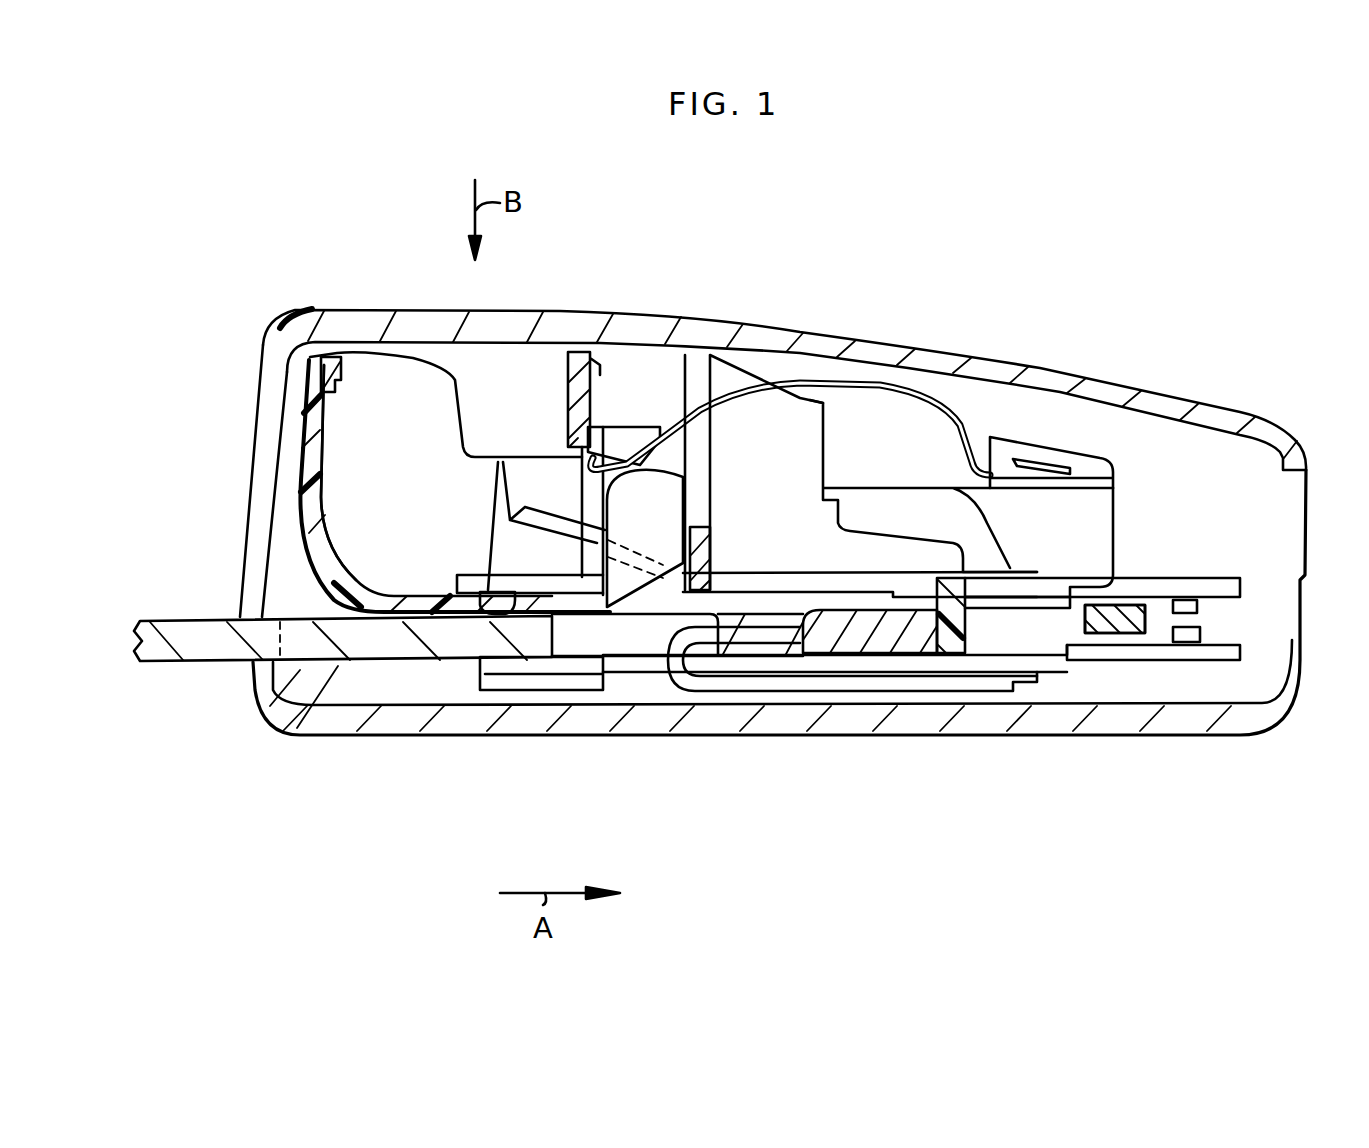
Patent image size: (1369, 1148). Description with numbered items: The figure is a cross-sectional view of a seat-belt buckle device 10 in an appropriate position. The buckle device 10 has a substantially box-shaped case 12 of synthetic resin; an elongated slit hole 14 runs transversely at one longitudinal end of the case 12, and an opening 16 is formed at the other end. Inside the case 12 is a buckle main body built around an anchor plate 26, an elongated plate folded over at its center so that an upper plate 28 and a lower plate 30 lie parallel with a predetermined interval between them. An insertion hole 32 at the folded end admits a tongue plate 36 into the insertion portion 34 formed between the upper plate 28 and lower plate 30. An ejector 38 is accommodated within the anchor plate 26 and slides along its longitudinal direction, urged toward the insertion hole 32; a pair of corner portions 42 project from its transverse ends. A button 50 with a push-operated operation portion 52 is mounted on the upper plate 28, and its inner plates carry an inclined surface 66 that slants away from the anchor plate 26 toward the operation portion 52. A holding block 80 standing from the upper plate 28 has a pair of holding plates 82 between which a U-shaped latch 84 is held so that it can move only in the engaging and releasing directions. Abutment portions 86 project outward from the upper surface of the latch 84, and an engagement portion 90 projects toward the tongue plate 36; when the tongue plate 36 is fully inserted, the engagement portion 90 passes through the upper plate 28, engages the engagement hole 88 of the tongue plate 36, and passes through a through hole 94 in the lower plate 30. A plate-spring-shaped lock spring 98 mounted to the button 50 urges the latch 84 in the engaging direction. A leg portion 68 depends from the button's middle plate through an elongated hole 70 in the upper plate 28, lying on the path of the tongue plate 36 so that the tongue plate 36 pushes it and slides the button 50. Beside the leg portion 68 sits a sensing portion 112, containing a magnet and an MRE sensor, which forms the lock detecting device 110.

The buckle device 10 is at (884, 262).
The case 12 is at (760, 332).
The slit hole 14 is at (1245, 712).
The opening 16 is at (268, 343).
The anchor plate 26 is at (1197, 573).
The upper plate 28 is at (1155, 580).
The lower plate 30 is at (1165, 663).
The insertion hole 32 is at (480, 662).
The insertion portion 34 is at (578, 662).
The tongue plate 36 is at (180, 661).
The ejector 38 is at (815, 636).
The corner portions 42 is at (873, 646).
The button 50 is at (364, 350).
The operation portion 52 is at (304, 430).
The inclined surface 66 is at (545, 520).
The leg portion 68 is at (967, 633).
The elongated hole 70 is at (1062, 598).
The holding block 80 is at (590, 350).
The holding plates 82 is at (568, 360).
The latch 84 is at (655, 440).
The abutment portions 86 is at (625, 428).
The engagement hole 88 is at (660, 660).
The engagement portion 90 is at (640, 610).
The through hole 94 is at (682, 691).
The lock spring 98 is at (945, 405).
The lock detecting device 110 is at (1142, 621).
The sensing portion 112 is at (1108, 638).